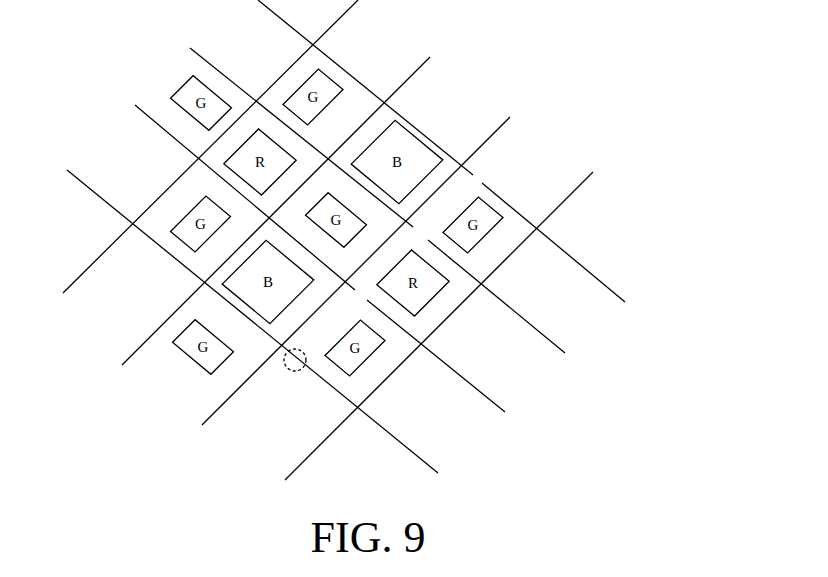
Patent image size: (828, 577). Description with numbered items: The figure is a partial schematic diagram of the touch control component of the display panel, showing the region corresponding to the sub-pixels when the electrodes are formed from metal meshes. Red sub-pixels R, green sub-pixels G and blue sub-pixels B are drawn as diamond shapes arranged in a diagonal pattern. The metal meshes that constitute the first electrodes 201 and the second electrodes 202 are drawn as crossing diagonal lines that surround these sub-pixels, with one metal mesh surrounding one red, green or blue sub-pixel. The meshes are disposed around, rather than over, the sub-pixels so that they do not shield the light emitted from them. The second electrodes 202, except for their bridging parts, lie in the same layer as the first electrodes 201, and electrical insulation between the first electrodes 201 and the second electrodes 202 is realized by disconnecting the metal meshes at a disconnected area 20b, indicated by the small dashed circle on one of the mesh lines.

The first electrode 201 is at (423, 133).
The second electrode 202 is at (553, 229).
The disconnected area 20b is at (287, 368).